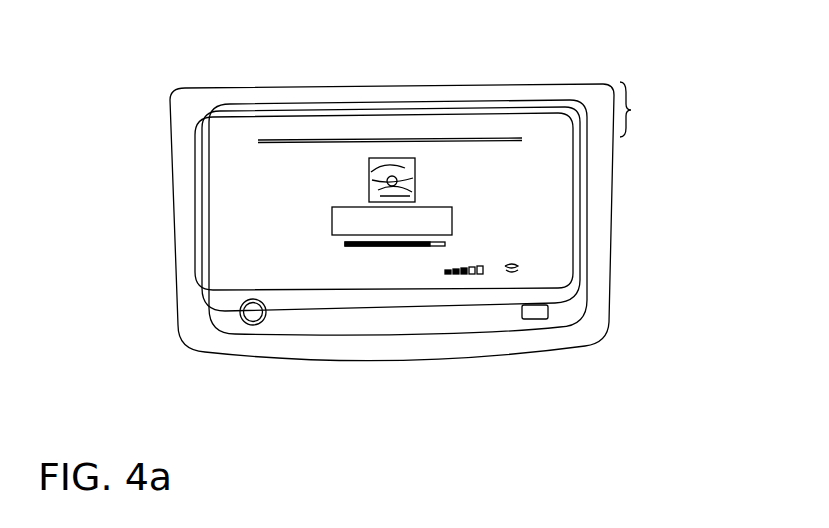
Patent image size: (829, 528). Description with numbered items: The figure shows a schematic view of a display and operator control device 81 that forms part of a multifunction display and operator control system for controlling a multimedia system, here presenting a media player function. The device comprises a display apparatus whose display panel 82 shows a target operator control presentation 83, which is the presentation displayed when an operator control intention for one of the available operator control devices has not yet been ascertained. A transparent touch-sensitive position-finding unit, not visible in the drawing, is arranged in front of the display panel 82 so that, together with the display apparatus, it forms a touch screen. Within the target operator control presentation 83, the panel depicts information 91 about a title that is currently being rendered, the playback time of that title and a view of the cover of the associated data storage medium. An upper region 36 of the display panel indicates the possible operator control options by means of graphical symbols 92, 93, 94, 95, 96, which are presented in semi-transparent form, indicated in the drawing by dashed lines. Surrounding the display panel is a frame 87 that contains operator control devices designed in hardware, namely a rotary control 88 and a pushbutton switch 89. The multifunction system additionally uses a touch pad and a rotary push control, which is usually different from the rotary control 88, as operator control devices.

The upper region 36 is at (644, 109).
The display and operator control device 81 is at (182, 313).
The display panel 82 is at (554, 198).
The target operator control presentation 83 is at (186, 245).
The frame 87 is at (461, 334).
The rotary control 88 is at (253, 312).
The pushbutton switch 89 is at (540, 320).
The information 91 is at (448, 221).
The graphical symbol 92 is at (285, 120).
The graphical symbol 93 is at (338, 120).
The graphical symbol 94 is at (394, 120).
The graphical symbol 95 is at (450, 118).
The graphical symbol 96 is at (503, 117).